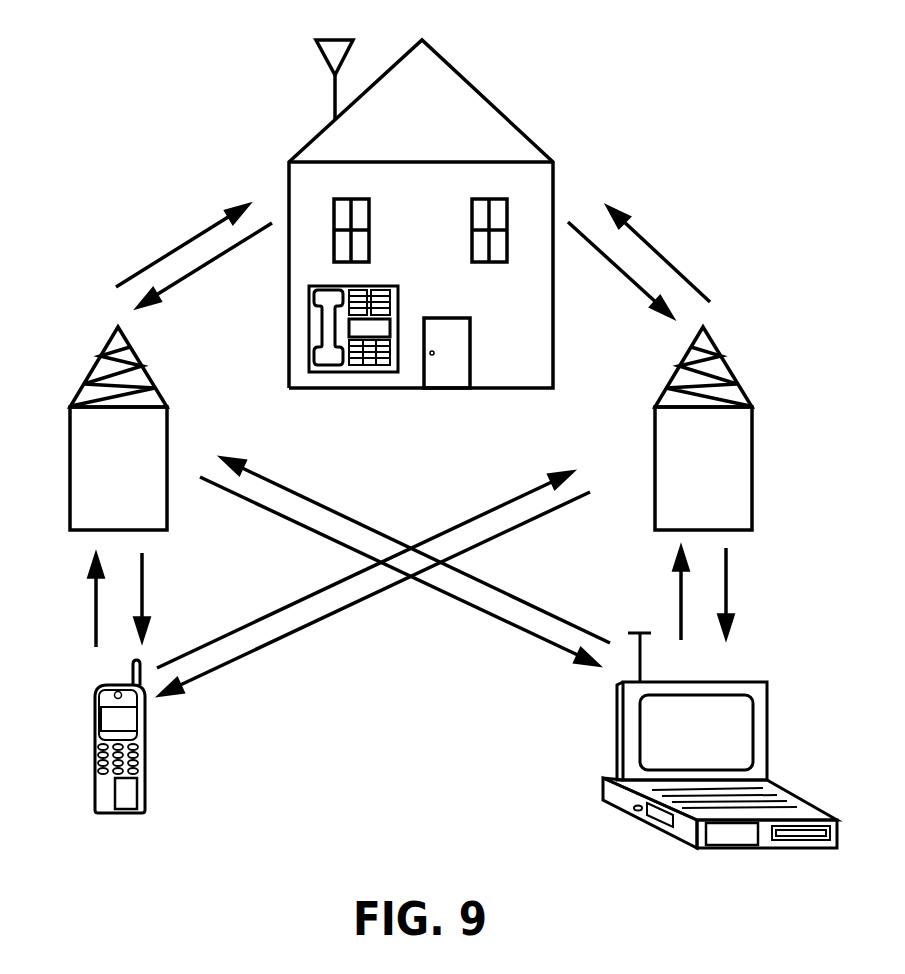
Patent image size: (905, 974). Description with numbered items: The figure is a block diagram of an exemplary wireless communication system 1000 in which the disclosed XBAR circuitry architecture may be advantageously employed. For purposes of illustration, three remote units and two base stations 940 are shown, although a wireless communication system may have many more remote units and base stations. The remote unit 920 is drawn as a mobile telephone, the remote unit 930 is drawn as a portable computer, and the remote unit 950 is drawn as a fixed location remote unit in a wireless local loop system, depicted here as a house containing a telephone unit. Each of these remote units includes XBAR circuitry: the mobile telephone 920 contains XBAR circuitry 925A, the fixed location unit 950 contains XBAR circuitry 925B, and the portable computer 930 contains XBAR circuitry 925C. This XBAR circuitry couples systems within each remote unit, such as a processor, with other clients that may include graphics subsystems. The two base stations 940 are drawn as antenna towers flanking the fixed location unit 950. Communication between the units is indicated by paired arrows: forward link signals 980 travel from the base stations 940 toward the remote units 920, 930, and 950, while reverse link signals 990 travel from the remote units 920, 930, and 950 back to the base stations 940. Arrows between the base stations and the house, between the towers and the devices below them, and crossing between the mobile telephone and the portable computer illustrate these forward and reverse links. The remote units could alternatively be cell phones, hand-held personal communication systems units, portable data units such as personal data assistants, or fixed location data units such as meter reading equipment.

The wireless communication system 1000 is at (433, 456).
The remote unit 950 is at (309, 338).
The XBAR circuitry 925B is at (378, 375).
The base station 940 is at (94, 367).
The forward link signal 980 is at (187, 242).
The reverse link signal 990 is at (192, 275).
The remote unit 920 is at (98, 695).
The XBAR circuitry 925A is at (127, 800).
The remote unit 930 is at (750, 680).
The XBAR circuitry 925C is at (737, 833).